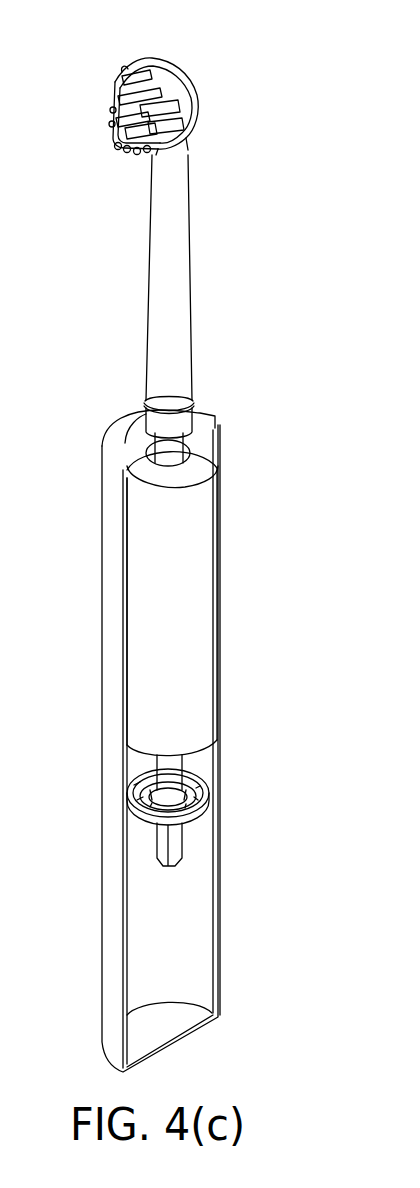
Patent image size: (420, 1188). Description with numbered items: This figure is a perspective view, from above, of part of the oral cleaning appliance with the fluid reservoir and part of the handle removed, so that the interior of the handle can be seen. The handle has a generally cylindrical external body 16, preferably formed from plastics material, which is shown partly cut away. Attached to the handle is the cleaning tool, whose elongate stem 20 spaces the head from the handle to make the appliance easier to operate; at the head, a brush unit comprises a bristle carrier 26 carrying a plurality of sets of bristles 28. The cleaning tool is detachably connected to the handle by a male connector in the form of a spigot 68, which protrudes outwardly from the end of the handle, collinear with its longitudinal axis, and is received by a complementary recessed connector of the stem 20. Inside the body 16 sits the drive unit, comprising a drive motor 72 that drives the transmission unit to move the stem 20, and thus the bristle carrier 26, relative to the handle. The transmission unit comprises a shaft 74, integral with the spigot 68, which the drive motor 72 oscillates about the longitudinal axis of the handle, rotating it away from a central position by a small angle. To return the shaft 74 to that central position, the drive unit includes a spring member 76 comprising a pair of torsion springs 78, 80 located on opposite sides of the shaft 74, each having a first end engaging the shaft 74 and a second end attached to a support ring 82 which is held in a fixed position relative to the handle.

The external body 16 is at (107, 563).
The stem 20 is at (157, 326).
The bristle carrier 26 is at (163, 70).
The sets of bristles 28 is at (176, 118).
The spigot 68 is at (182, 456).
The drive motor 72 is at (202, 615).
The shaft 74 is at (170, 765).
The spring member 76 is at (196, 830).
The torsion spring 78 is at (208, 795).
The torsion spring 80 is at (140, 790).
The support ring 82 is at (207, 808).